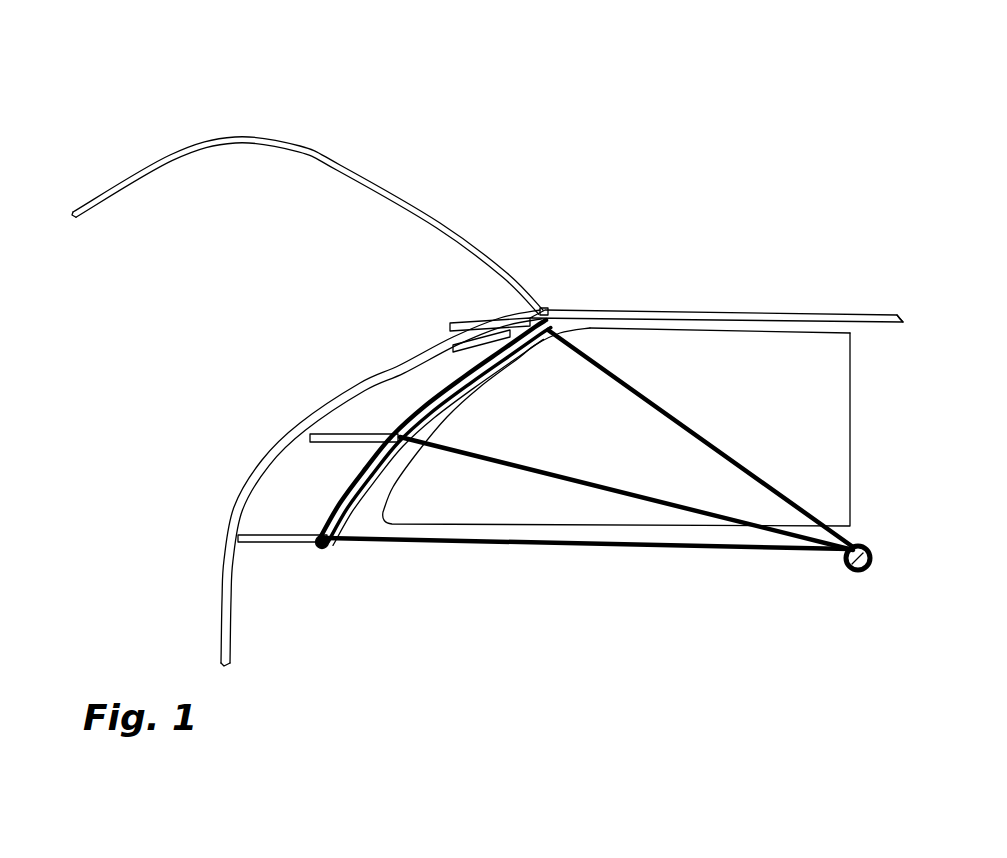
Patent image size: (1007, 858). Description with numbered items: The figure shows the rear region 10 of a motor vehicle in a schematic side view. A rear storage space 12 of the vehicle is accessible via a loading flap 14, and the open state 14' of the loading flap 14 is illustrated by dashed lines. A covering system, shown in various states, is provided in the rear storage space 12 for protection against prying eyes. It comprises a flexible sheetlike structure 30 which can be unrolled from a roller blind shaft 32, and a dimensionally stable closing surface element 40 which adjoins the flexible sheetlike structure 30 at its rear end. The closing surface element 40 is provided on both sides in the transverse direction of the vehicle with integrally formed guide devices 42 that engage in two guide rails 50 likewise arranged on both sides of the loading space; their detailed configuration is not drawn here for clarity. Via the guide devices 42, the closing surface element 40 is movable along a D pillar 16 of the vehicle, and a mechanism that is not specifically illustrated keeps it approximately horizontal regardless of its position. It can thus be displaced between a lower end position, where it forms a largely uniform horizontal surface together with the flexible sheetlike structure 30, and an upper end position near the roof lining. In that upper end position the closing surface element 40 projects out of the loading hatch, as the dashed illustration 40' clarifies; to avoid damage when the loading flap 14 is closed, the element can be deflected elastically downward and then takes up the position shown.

The rear region 10 is at (143, 389).
The rear storage space 12 is at (609, 599).
The loading flap 14 is at (330, 488).
The open state of the loading flap 14' is at (298, 207).
The D pillar 16 is at (345, 415).
The flexible sheetlike structure 30 is at (662, 410).
The roller blind shaft 32 is at (848, 570).
The dimensionally stable closing surface element 40 is at (309, 620).
The dashed illustration of the closing surface element 40' is at (514, 210).
The guide devices 42 is at (393, 430).
The guide rails 50 is at (420, 400).